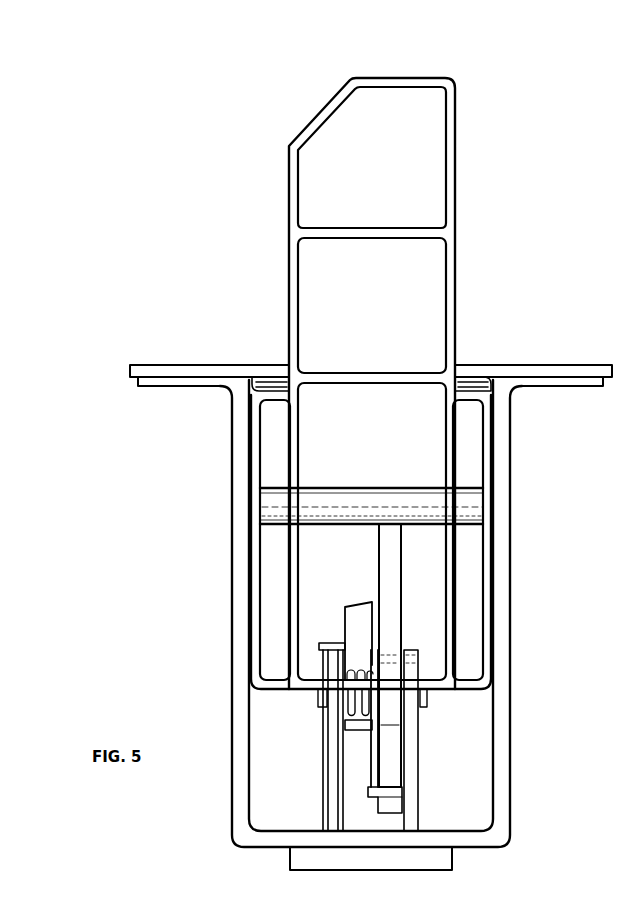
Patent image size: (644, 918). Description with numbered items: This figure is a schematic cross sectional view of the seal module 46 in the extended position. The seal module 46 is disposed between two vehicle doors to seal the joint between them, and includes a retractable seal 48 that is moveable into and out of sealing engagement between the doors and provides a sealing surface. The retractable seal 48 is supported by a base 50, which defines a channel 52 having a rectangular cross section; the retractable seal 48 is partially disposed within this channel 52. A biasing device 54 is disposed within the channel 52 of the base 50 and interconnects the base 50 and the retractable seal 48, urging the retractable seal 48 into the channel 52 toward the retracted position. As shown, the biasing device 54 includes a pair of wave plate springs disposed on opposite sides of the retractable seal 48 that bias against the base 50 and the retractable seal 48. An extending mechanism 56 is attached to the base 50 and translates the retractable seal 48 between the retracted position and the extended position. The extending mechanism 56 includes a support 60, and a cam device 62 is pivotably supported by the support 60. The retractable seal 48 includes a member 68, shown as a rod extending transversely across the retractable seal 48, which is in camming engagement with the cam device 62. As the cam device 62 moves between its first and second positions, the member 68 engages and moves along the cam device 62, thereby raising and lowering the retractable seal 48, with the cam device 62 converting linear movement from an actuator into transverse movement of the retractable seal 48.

The seal module 46 is at (468, 67).
The retractable seal 48 is at (385, 77).
The base 50 is at (513, 742).
The channel 52 is at (376, 816).
The biasing device 54 is at (267, 386).
The extending mechanism 56 is at (420, 728).
The support 60 is at (420, 803).
The cam device 62 is at (388, 563).
The member 68 is at (343, 497).